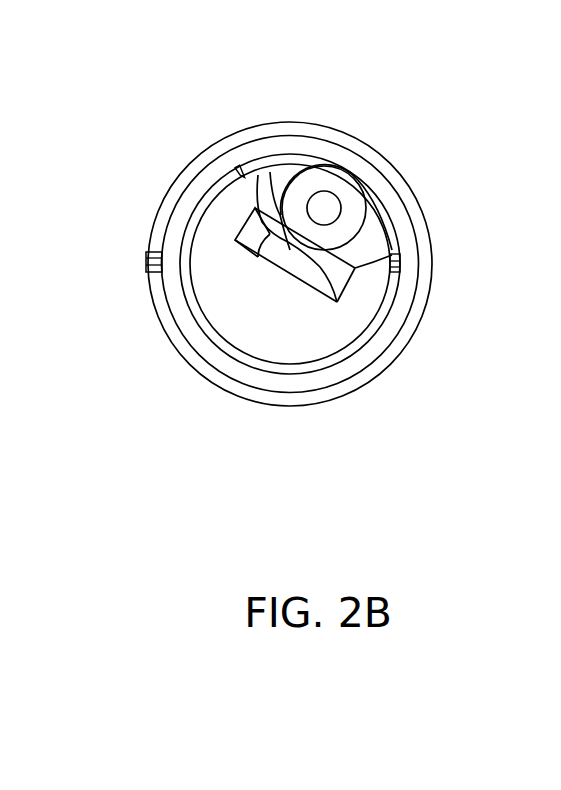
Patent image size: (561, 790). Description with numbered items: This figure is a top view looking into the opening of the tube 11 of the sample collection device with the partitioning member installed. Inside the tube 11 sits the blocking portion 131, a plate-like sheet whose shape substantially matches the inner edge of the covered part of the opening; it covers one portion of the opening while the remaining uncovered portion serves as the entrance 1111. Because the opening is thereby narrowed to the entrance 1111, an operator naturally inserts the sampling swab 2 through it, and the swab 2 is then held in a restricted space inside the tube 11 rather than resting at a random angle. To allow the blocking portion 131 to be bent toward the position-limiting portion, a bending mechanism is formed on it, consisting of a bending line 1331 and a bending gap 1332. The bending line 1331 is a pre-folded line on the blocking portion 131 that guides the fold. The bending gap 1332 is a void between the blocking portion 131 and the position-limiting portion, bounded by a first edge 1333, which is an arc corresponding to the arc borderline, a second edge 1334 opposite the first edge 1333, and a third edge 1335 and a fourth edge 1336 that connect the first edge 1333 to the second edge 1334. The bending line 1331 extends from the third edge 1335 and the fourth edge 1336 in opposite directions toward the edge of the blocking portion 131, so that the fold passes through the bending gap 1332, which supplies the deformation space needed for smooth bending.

The sampling swab 2 is at (342, 185).
The tube 11 is at (428, 214).
The entrance 1111 is at (365, 245).
The blocking portion 131 is at (333, 338).
The bending line 1331 is at (239, 167).
The bending gap 1332 is at (325, 292).
The first edge 1333 is at (270, 183).
The second edge 1334 is at (287, 270).
The third edge 1335 is at (243, 213).
The fourth edge 1336 is at (353, 283).